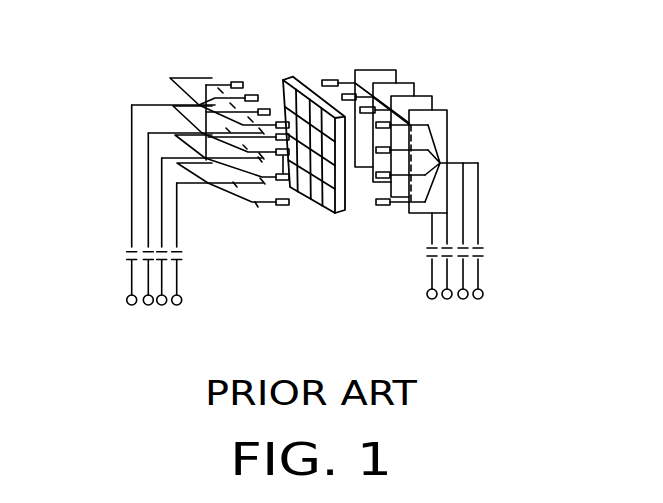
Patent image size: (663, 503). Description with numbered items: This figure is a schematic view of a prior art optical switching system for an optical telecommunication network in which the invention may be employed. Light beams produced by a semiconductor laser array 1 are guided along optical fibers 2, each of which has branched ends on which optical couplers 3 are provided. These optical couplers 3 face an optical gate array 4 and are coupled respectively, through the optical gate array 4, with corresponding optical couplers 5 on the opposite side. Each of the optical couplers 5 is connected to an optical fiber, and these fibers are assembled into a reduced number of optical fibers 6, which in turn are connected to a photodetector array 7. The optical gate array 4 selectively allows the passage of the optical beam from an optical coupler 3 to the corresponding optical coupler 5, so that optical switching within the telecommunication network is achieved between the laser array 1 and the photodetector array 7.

The semiconductor laser array 1 is at (120, 300).
The optical fibers 2 is at (121, 231).
The optical couplers 3 is at (229, 80).
The optical gate array 4 is at (318, 215).
The optical couplers 5 is at (369, 213).
The optical fibers 6 is at (483, 192).
The photodetector array 7 is at (488, 295).